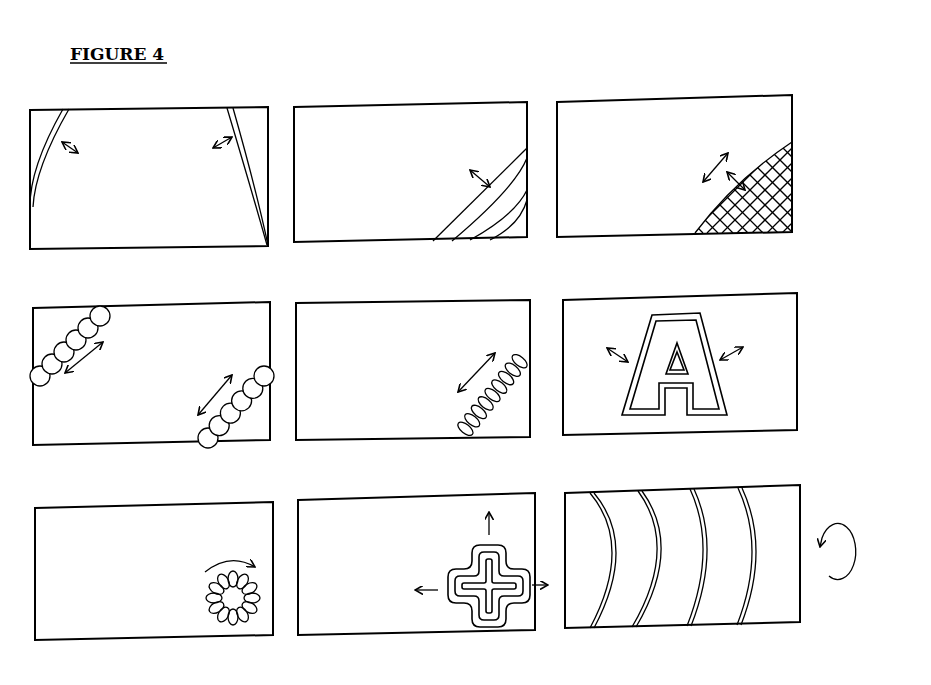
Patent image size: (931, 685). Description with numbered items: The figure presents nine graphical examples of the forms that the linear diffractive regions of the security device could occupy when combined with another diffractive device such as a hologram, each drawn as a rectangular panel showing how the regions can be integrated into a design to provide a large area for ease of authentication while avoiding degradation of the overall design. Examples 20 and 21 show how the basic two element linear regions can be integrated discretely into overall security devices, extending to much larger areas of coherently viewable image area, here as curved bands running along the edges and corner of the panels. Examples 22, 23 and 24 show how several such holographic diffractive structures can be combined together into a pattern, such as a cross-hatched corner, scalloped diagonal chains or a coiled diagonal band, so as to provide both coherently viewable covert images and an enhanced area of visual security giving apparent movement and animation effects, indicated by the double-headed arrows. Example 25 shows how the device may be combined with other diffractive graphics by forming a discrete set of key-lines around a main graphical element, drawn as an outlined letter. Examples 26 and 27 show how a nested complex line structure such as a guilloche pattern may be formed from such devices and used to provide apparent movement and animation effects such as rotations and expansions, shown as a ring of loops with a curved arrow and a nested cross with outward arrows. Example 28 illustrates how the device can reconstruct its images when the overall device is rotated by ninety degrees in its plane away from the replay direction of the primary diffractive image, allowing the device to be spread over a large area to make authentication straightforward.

The example of basic two element linear regions 20 is at (149, 169).
The example of basic two element linear regions 21 is at (410, 164).
The example of combined holographic diffractive structures 22 is at (712, 158).
The example of combined holographic diffractive structures 23 is at (152, 366).
The example of combined holographic diffractive structures 24 is at (413, 362).
The example of device combined with other diffractive graphics 25 is at (679, 356).
The example of nested complex line structure 26 is at (154, 564).
The example of nested complex line structure 27 is at (423, 557).
The example of device reconstructing images under in-plane rotation 28 is at (710, 550).